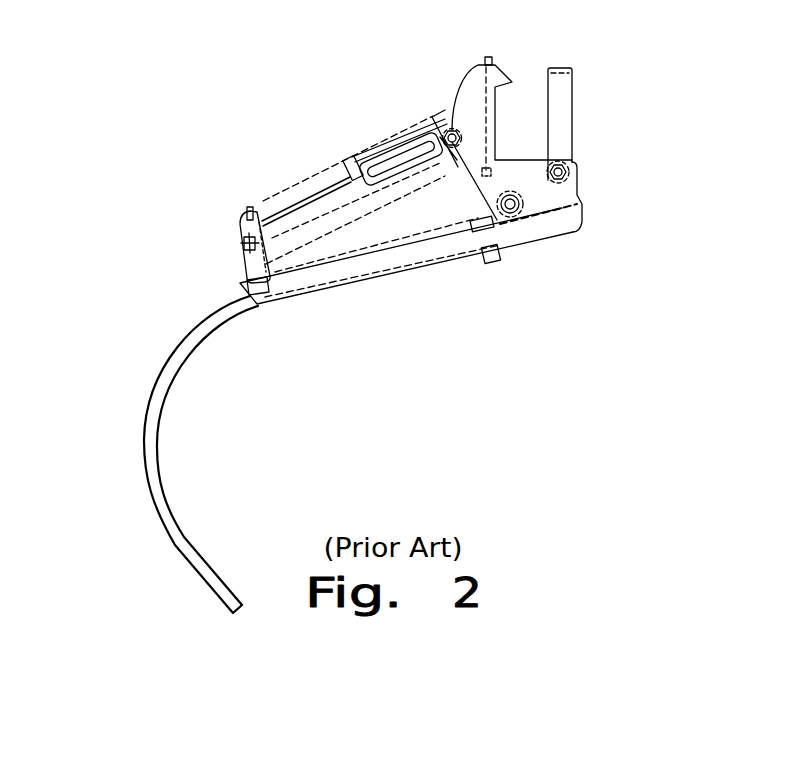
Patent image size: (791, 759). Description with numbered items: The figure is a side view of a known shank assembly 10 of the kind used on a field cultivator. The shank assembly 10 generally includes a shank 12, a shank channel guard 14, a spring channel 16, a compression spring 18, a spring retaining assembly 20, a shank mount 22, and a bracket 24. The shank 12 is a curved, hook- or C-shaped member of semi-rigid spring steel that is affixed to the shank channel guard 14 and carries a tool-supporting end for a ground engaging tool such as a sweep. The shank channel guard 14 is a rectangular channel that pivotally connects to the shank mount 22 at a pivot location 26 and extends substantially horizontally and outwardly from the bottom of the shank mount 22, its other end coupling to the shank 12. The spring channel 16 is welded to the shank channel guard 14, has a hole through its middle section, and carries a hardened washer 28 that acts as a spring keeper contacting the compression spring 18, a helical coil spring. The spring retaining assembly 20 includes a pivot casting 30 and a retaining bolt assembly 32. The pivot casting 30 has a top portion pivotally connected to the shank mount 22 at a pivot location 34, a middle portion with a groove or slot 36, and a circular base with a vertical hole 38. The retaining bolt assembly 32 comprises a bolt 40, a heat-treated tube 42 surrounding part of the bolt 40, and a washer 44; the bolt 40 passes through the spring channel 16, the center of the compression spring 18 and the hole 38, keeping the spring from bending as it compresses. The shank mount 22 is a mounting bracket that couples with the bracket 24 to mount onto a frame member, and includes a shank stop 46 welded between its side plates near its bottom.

The shank assembly 10 is at (445, 295).
The shank 12 is at (176, 545).
The shank channel guard 14 is at (304, 297).
The spring channel 16 is at (250, 266).
The compression spring 18 is at (312, 242).
The spring retaining assembly 20 is at (360, 120).
The shank mount 22 is at (552, 186).
The bracket 24 is at (567, 100).
The pivot location 26 is at (532, 222).
The hardened washer 28 is at (263, 207).
The pivot casting 30 is at (402, 140).
The retaining bolt assembly 32 is at (285, 211).
The pivot location 34 is at (453, 128).
The groove or slot 36 is at (432, 116).
The vertical bore or hole 38 is at (355, 176).
The bolt 40 is at (390, 172).
The heat-treated tube 42 is at (322, 207).
The washer 44 is at (242, 240).
The shank stop 46 is at (576, 201).